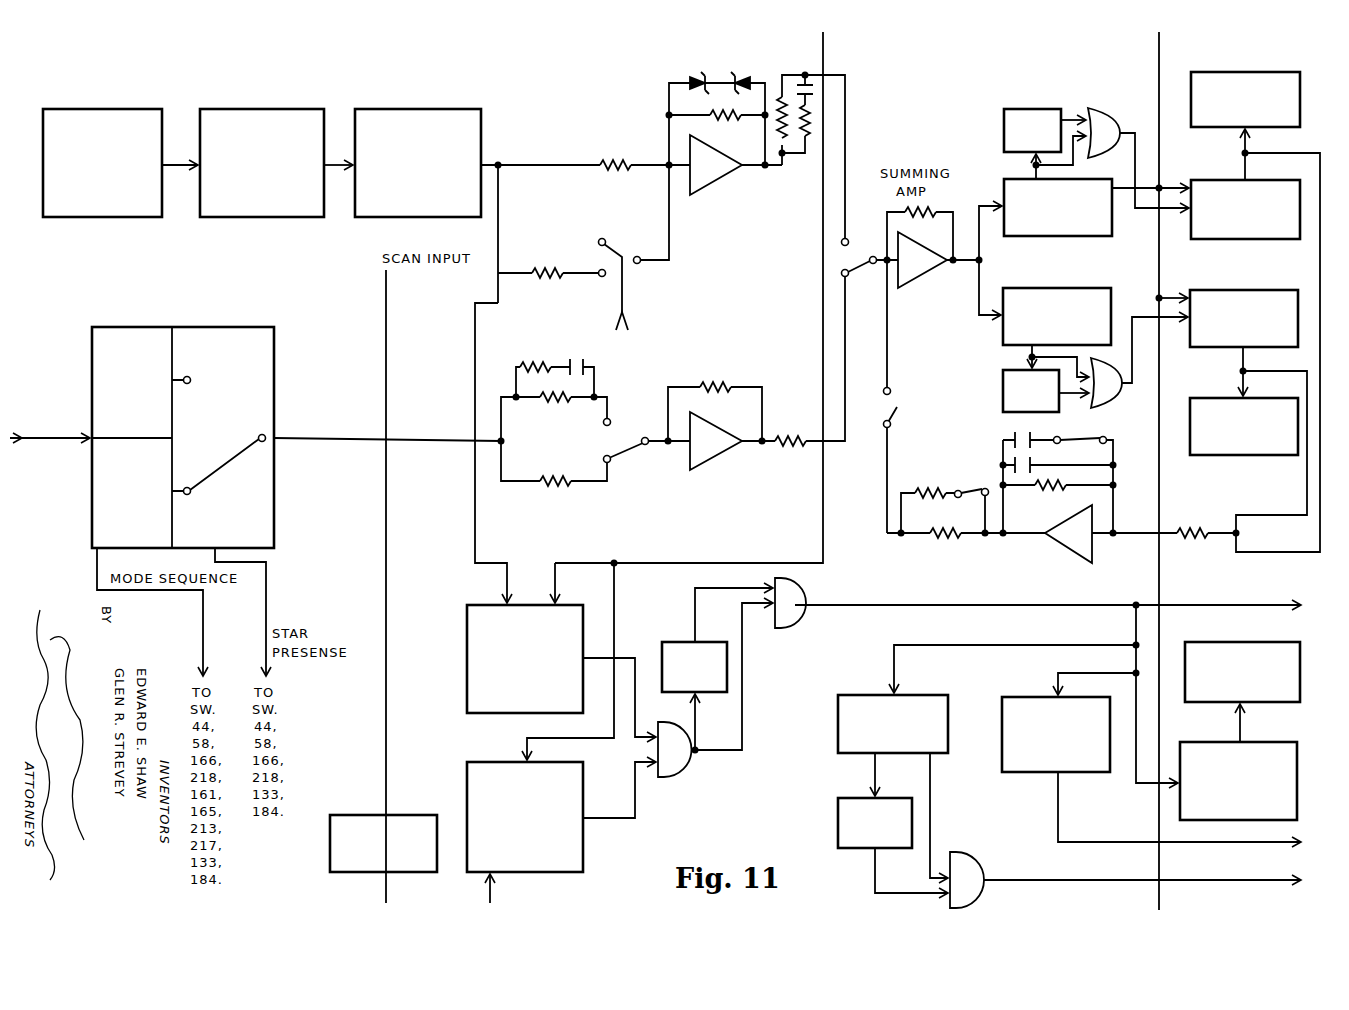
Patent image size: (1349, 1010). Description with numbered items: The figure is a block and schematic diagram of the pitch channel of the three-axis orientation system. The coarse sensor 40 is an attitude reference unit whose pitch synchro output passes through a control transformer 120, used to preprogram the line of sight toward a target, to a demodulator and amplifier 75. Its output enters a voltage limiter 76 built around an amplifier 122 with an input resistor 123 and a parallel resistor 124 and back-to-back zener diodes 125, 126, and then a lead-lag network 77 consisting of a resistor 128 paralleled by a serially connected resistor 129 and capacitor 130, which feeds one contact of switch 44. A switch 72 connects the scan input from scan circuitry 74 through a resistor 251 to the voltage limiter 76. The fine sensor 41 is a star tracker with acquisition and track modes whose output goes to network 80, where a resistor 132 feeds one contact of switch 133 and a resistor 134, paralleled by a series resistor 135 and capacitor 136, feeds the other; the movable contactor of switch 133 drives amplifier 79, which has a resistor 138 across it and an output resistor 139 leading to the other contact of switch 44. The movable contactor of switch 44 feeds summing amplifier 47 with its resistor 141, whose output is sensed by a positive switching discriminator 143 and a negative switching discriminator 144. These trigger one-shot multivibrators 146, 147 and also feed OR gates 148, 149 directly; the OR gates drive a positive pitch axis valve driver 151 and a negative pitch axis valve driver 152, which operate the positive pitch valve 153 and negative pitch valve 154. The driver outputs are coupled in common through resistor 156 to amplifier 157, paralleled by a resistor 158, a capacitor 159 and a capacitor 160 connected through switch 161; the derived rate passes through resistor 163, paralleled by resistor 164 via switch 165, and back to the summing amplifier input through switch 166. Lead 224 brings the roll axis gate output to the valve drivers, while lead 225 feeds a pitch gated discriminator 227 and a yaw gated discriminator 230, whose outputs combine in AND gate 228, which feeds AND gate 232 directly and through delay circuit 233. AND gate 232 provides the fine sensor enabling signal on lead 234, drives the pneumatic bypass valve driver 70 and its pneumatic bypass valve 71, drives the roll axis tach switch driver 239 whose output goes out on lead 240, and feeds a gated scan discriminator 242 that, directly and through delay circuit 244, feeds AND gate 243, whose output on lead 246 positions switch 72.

The coarse sensor 40 is at (140, 104).
The control transformer 120 is at (287, 104).
The demodulator and amplifier 75 is at (442, 104).
The input resistor 123 is at (624, 154).
The voltage limiter 76 is at (692, 125).
The amplifier 122 is at (714, 185).
The resistor 124 is at (718, 126).
The zener diode 125 is at (698, 74).
The zener diode 126 is at (736, 74).
The lead-lag network 77 is at (821, 135).
The resistor 128 is at (786, 142).
The resistor 129 is at (804, 75).
The capacitor 130 is at (818, 98).
The lead 225 is at (828, 34).
The switch 72 is at (616, 250).
The lead 246 is at (627, 310).
The resistor 251 is at (566, 266).
The fine sensor 41 is at (276, 354).
The lead 234 is at (26, 398).
The network 80 is at (672, 381).
The resistor 134 is at (566, 402).
The resistor 135 is at (542, 360).
The capacitor 136 is at (580, 360).
The resistor 132 is at (570, 476).
The switch 133 is at (633, 450).
The amplifier 79 is at (718, 466).
The resistor 138 is at (734, 378).
The resistor 139 is at (808, 431).
The switch 44 is at (850, 262).
The summing amplifier 47 is at (920, 254).
The resistor 141 is at (912, 224).
The positive switching discriminator 143 is at (1116, 196).
The one-shot multivibrator 146 is at (1034, 108).
The OR gate 148 is at (1108, 130).
The positive pitch valve 153 is at (1288, 70).
The positive pitch axis valve driver 151 is at (1228, 178).
The negative switching discriminator 144 is at (1072, 290).
The one-shot multivibrator 147 is at (1008, 380).
The OR gate 149 is at (1107, 386).
The negative pitch axis valve driver 152 is at (1258, 289).
The negative pitch valve 154 is at (1224, 400).
The lead 224 is at (1163, 48).
The switch 166 is at (893, 412).
The resistor 163 is at (924, 540).
The resistor 164 is at (936, 488).
The switch 165 is at (984, 488).
The amplifier 157 is at (1058, 546).
The resistor 158 is at (1066, 494).
The capacitor 159 is at (1038, 452).
The capacitor 160 is at (1018, 438).
The switch 161 is at (1072, 442).
The resistor 156 is at (1212, 528).
The pitch gated discriminator 227 is at (457, 611).
The yaw gated discriminator 230 is at (476, 764).
The AND gate 228 is at (680, 728).
The delay circuit 233 is at (682, 640).
The AND gate 232 is at (776, 578).
The scan circuitry 74 is at (432, 814).
The gated scan discriminator 242 is at (876, 694).
The roll axis tach switch driver 239 is at (1040, 694).
The delay circuit 244 is at (828, 788).
The AND gate 243 is at (978, 898).
The lead 240 is at (1256, 850).
The pneumatic bypass valve 71 is at (1222, 714).
The pneumatic bypass valve driver 70 is at (1286, 740).